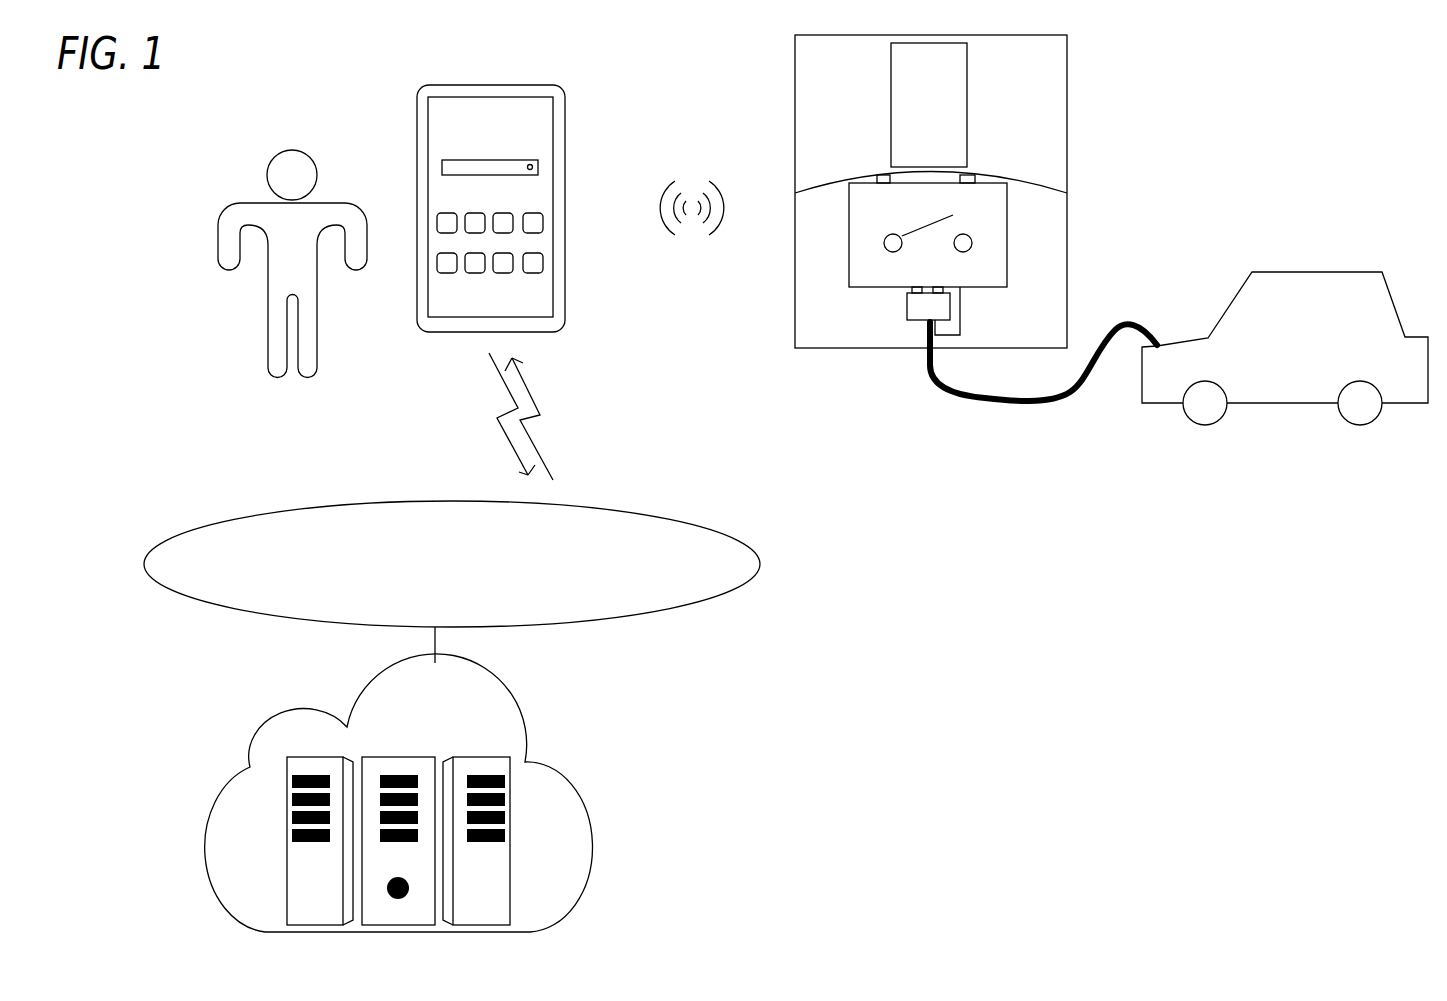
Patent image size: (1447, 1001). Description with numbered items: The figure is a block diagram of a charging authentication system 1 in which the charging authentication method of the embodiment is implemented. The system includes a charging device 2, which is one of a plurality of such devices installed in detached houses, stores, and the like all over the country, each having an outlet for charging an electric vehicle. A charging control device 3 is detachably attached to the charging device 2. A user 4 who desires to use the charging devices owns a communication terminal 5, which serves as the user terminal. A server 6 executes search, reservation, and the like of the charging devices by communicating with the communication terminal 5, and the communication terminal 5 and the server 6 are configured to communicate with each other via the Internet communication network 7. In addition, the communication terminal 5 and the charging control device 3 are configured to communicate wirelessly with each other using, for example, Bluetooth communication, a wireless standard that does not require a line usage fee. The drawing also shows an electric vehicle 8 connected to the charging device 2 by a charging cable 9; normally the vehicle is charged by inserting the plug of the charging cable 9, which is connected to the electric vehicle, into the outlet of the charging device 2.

The charging authentication system 1 is at (1003, 652).
The charging device 2 is at (1066, 132).
The charging control device 3 is at (1007, 247).
The user 4 is at (252, 203).
The communication terminal 5 is at (563, 185).
The server 6 is at (525, 745).
The Internet communication network 7 is at (674, 521).
The vehicle 8 is at (1338, 268).
The charging cable 9 is at (960, 397).